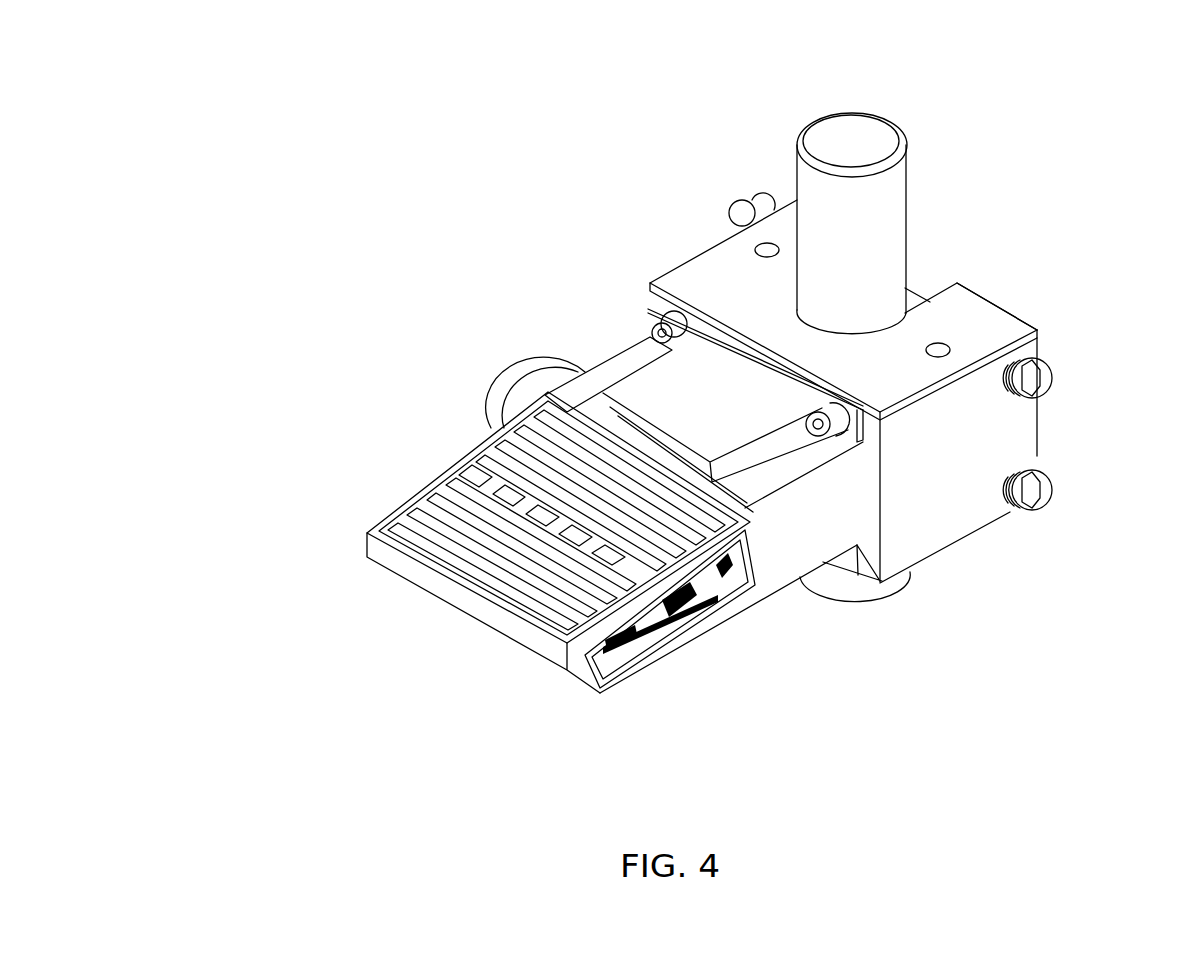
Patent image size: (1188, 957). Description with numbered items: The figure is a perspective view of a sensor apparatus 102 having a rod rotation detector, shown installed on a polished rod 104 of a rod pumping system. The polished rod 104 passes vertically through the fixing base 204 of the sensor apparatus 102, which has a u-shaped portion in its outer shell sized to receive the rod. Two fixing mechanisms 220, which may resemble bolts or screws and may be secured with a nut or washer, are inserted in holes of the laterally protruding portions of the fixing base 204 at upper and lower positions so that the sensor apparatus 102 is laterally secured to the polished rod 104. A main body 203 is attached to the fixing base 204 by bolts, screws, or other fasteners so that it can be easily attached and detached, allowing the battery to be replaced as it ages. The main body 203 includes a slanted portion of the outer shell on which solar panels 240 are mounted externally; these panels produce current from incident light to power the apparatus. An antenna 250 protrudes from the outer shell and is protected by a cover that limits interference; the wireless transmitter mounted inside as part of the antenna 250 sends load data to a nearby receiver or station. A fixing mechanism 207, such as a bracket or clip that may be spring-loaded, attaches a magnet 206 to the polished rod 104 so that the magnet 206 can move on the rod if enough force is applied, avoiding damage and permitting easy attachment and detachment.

The sensor apparatus 102 is at (228, 678).
The polished rod 104 is at (815, 193).
The main body 203 is at (636, 333).
The fixing base 204 is at (733, 256).
The magnet 206 is at (997, 306).
The fixing mechanism 207 is at (918, 291).
The fixing mechanisms 220 is at (1042, 356).
The solar panels 240 is at (425, 497).
The antenna 250 is at (485, 362).